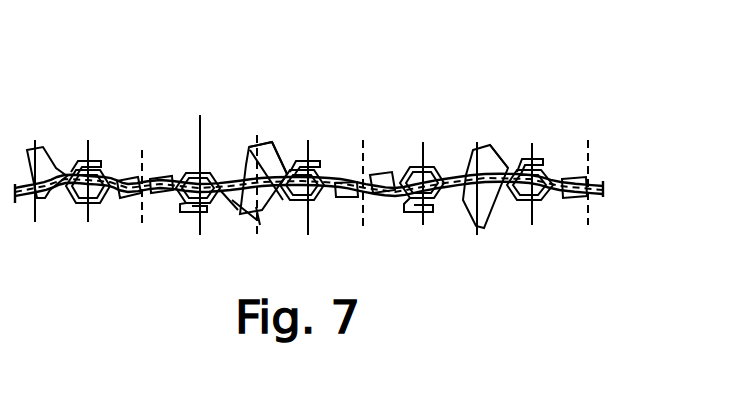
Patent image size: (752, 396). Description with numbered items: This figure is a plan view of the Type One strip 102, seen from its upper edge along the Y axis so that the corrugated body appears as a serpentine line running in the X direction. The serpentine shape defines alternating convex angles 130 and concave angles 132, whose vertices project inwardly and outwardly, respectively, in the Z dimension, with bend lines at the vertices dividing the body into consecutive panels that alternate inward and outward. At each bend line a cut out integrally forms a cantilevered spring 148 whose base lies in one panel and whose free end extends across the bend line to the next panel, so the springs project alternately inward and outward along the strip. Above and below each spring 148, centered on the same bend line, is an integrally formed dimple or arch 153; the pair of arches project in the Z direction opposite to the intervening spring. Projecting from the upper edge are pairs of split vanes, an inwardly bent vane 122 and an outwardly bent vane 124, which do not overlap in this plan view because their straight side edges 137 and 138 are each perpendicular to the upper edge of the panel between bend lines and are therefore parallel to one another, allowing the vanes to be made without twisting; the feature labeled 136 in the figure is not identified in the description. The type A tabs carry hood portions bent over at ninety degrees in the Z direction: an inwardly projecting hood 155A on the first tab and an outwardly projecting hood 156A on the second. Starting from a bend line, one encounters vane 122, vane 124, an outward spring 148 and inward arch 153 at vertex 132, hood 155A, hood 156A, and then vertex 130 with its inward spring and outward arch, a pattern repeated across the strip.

The Type 1 strip 102 is at (595, 182).
The inwardly bent vane 122 is at (268, 140).
The outwardly bent vane 124 is at (270, 143).
The convex angle 130 is at (238, 222).
The concave angle 132 is at (348, 200).
The flange 136 is at (253, 203).
The straight side of vane 137 is at (248, 152).
The straight side of vane 138 is at (256, 207).
The cantilevered spring 148 is at (190, 205).
The arch 153 is at (200, 125).
The inwardly projecting hood 155A is at (128, 199).
The outwardly projecting hood 156A is at (160, 176).